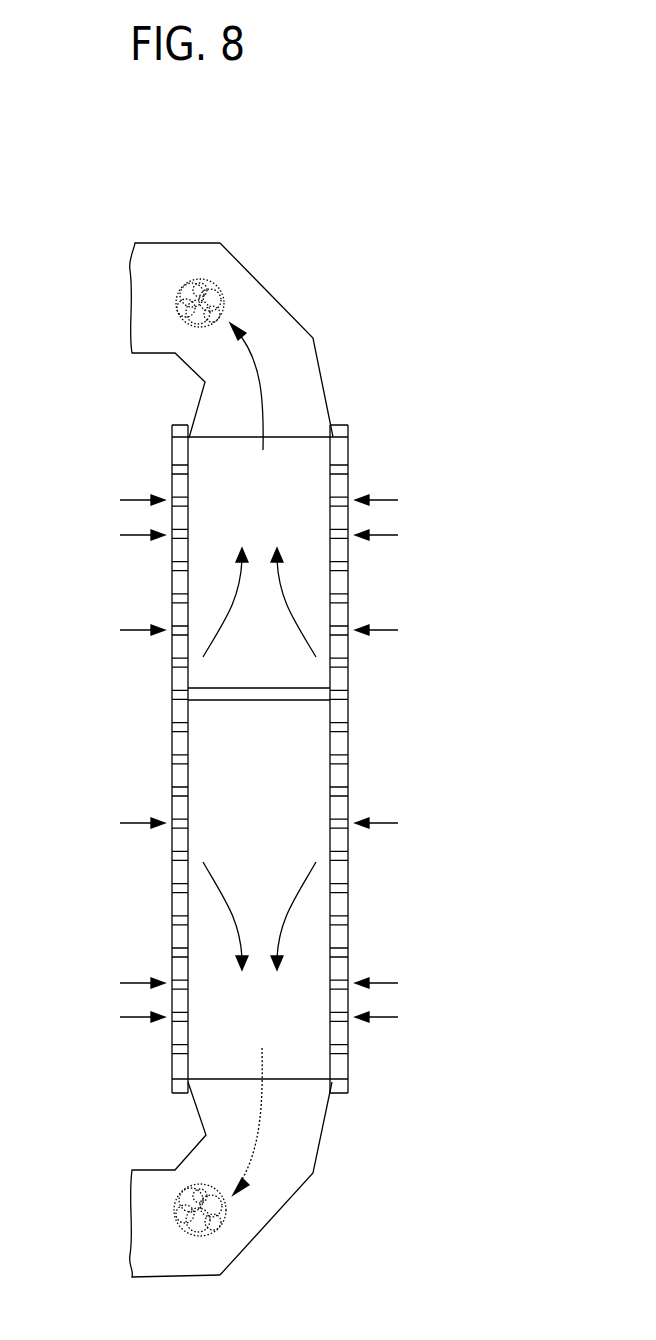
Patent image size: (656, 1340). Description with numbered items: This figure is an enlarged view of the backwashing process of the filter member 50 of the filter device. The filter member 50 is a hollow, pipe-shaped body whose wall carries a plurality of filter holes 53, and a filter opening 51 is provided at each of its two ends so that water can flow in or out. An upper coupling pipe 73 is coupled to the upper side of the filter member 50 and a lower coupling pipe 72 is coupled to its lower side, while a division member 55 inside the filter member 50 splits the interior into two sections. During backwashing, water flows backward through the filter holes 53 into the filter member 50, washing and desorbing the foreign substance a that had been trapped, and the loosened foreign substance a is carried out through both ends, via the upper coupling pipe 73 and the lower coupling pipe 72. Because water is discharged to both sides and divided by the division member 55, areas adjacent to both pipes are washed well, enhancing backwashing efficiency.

The filter member 50 is at (486, 288).
The filter opening 51 is at (300, 437).
The filter hole 53 is at (348, 600).
The division member 55 is at (296, 694).
The lower coupling pipe 72 is at (268, 1227).
The upper coupling pipe 73 is at (268, 292).
The foreign substance a is at (220, 280).